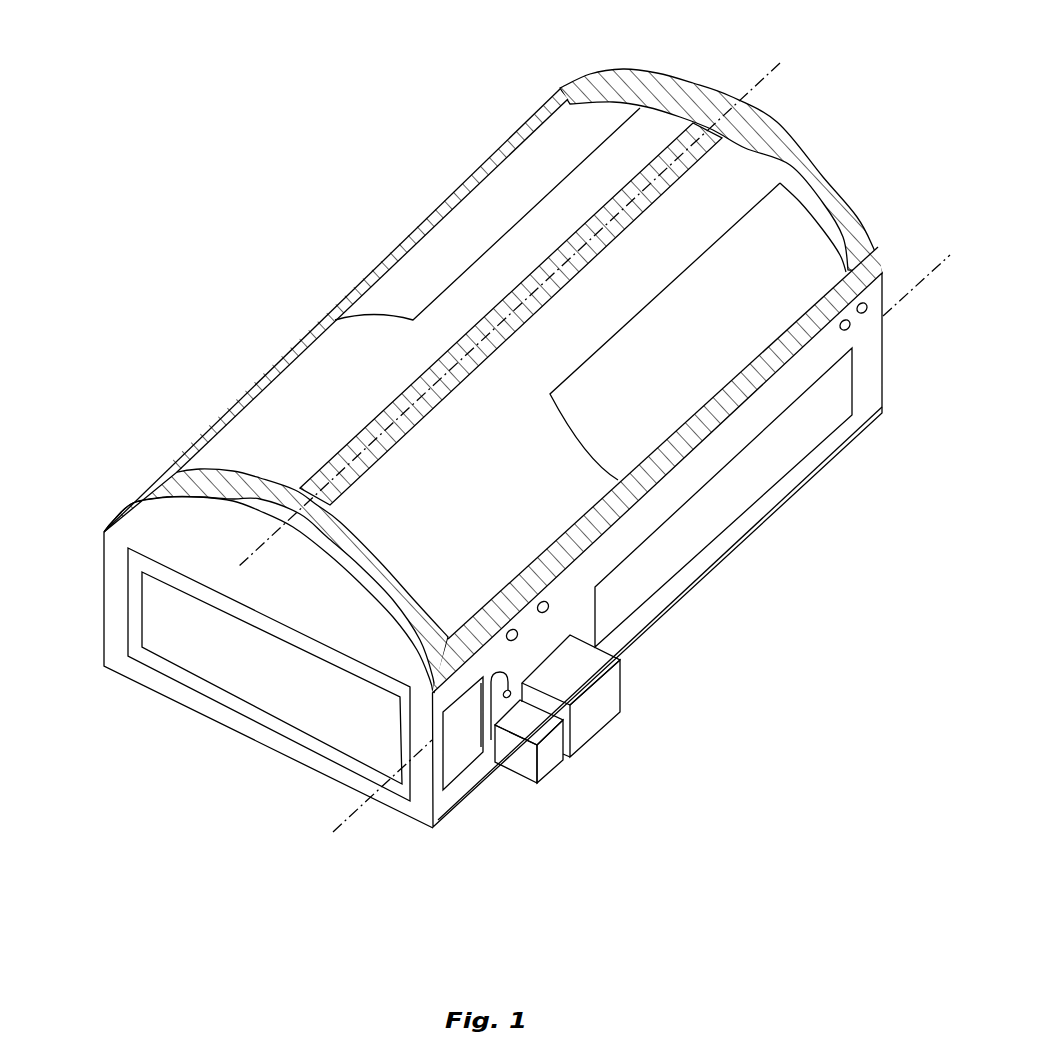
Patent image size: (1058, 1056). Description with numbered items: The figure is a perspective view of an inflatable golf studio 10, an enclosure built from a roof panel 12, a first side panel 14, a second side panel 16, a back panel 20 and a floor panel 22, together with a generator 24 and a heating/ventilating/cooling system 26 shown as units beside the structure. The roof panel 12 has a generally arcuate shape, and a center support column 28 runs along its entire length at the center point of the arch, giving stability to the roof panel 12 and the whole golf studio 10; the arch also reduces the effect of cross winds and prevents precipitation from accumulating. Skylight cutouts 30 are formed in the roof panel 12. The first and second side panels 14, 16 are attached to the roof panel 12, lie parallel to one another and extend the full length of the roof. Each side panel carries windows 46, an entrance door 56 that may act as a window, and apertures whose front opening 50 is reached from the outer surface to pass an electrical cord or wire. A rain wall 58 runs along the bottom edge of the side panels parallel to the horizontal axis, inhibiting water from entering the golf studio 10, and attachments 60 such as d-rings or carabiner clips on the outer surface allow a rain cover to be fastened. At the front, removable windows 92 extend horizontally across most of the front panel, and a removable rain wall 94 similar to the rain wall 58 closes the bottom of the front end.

The inflatable golf studio 10 is at (262, 140).
The roof panel 12 is at (334, 316).
The first side panel 14 is at (870, 353).
The second side panel 16 is at (146, 490).
The back panel 20 is at (822, 170).
The floor panel 22 is at (133, 537).
The generator 24 is at (597, 720).
The heating/ventilating/cooling system 26 is at (548, 762).
The center support column 28 is at (700, 123).
The skylight cutouts 30 is at (483, 210).
The windows 46 is at (740, 497).
The front opening 50 is at (472, 728).
The entrance door 56 is at (453, 765).
The rain wall 58 is at (815, 462).
The attachments 60 is at (550, 606).
The removable windows 92 is at (283, 710).
The rain wall 94 is at (113, 662).